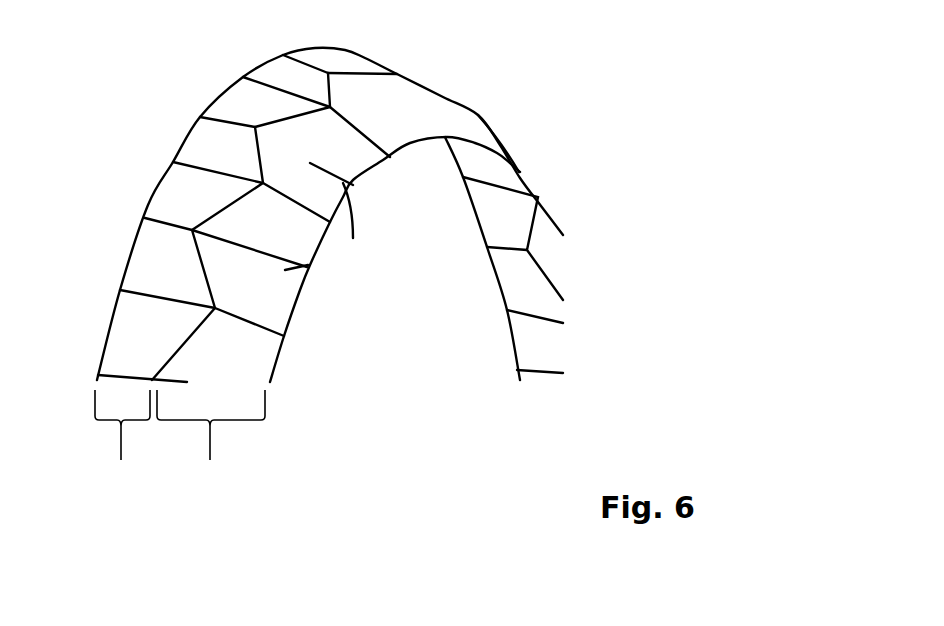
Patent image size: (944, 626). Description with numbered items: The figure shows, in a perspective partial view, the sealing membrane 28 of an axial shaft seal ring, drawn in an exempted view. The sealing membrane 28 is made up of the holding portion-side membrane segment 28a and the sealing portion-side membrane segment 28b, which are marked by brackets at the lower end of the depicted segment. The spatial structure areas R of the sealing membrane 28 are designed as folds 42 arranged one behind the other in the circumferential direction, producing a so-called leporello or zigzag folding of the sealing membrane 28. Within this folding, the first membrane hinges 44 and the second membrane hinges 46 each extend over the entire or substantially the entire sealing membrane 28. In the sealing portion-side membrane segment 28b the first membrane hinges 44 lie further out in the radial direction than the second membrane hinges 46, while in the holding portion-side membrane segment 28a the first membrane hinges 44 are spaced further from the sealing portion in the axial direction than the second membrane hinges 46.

The sealing membrane 28 is at (332, 195).
The holding portion-side membrane segment 28a is at (211, 440).
The sealing portion-side membrane segment 28b is at (122, 440).
The folds 42 is at (210, 360).
The first membrane hinge 44 is at (258, 217).
The second membrane hinge 46 is at (395, 259).